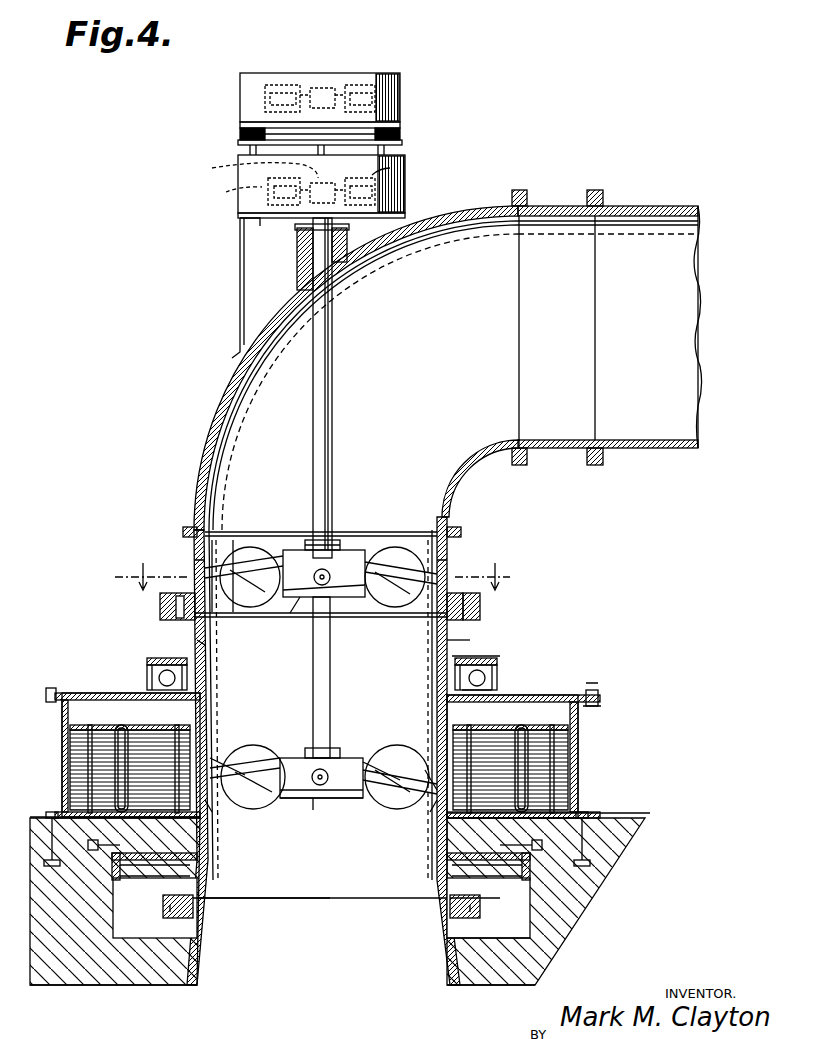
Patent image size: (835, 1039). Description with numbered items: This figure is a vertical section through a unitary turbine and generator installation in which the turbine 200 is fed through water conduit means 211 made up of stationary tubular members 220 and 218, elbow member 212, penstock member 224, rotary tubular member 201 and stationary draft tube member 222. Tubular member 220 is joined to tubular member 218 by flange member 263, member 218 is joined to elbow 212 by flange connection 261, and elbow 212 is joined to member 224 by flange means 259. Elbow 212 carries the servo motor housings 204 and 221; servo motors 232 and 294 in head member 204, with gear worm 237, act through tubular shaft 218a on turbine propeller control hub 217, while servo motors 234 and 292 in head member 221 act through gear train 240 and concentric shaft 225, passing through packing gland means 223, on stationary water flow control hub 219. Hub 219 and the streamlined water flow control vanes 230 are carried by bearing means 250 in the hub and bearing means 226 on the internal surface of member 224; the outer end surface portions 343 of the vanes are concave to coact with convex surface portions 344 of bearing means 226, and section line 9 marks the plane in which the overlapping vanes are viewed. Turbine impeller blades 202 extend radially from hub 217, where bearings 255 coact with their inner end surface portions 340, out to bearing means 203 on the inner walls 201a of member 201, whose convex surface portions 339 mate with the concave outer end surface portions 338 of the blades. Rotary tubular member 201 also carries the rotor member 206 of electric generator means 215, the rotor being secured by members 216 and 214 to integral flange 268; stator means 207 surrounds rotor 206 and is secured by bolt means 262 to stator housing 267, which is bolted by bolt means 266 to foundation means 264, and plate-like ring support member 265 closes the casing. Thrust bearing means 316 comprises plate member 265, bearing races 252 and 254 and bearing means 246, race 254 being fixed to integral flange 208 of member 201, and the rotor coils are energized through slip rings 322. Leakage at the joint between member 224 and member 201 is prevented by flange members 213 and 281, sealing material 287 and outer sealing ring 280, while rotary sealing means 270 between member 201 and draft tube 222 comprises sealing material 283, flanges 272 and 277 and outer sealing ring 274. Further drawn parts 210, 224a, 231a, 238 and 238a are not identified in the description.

The section line 9 is at (312, 576).
The turbine 200 is at (470, 630).
The rotary tubular member 201 is at (190, 640).
The inner walls 201a is at (202, 648).
The turbine impeller blades 202 is at (365, 768).
The bearing means 203 is at (228, 810).
The servo motor housing 204 is at (402, 106).
The rotor member 206 is at (100, 722).
The stator means 207 is at (60, 728).
The integral flange 208 is at (150, 652).
The lower bearing box 210 is at (470, 880).
The water conduit means 211 is at (632, 196).
The elbow member 212 is at (232, 396).
The flange member 213 is at (490, 595).
The member 214 is at (430, 775).
The electric generator means 215 is at (600, 698).
The member 216 is at (163, 740).
The turbine propeller control hub 217 is at (313, 744).
The tubular member 218 is at (528, 210).
The tubular shaft 218a is at (330, 692).
The water flow control hub 219 is at (358, 545).
The tubular member 220 is at (690, 203).
The servo motor housing 221 is at (406, 186).
The stationary draft tube member 222 is at (196, 950).
The packing gland means 223 is at (303, 228).
The penstock member 224 is at (460, 566).
The liner wall 224a is at (228, 535).
The tubular shaft 225 is at (327, 416).
The bearing means 226 is at (185, 537).
The water flow control vanes 230 is at (346, 550).
The inner wall 231a is at (268, 520).
The servo motor 232 is at (360, 92).
The servo motor 234 is at (392, 168).
The gear worm 237 is at (318, 90).
The hub plate 238 is at (330, 800).
The hub plate 238a is at (290, 600).
The gear train 240 is at (218, 170).
The bearing means 246 is at (150, 672).
The bearing means 250 is at (340, 545).
The bearing race 252 is at (496, 685).
The bearing race 254 is at (480, 658).
The bearings 255 is at (313, 805).
The flange means 259 is at (450, 522).
The flange connection 261 is at (512, 194).
The bolt means 262 is at (85, 768).
The flange member 263 is at (598, 192).
The foundation means 264 is at (640, 813).
The plate-like ring support member 265 is at (596, 688).
The bolt means 266 is at (50, 812).
The stator housing 267 is at (572, 775).
The integral flange 268 is at (460, 826).
The rotary sealing means 270 is at (483, 945).
The flange 272 is at (195, 890).
The outer sealing ring 274 is at (165, 826).
The flange 277 is at (150, 945).
The outer sealing ring 280 is at (160, 600).
The flange member 281 is at (178, 622).
The sealing material 283 is at (196, 908).
The sealing material 287 is at (192, 572).
The servo motor 292 is at (232, 192).
The servo motor 294 is at (284, 95).
The thrust bearing means 316 is at (198, 670).
The slip rings 322 is at (142, 860).
The outer circumferential end surface portions 338 is at (250, 770).
The arcuately convex external surface portions 339 is at (212, 760).
The innermost central end surface portions 340 is at (360, 760).
The outer circumferential end surface portions 343 is at (395, 600).
The external arcuately convex surface portions 344 is at (240, 570).